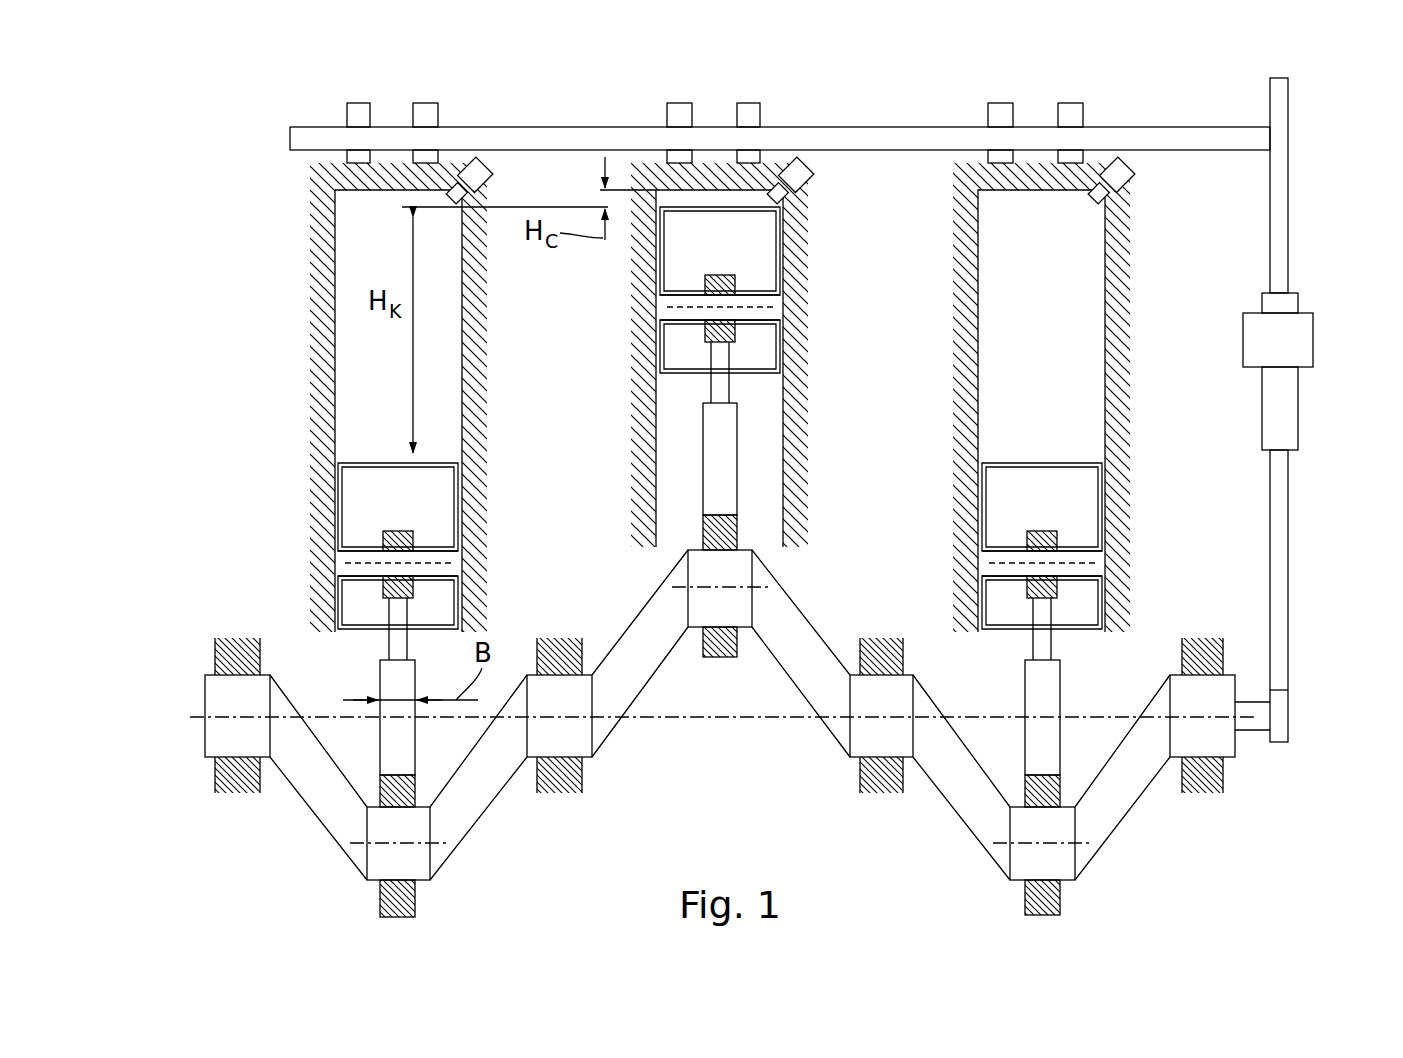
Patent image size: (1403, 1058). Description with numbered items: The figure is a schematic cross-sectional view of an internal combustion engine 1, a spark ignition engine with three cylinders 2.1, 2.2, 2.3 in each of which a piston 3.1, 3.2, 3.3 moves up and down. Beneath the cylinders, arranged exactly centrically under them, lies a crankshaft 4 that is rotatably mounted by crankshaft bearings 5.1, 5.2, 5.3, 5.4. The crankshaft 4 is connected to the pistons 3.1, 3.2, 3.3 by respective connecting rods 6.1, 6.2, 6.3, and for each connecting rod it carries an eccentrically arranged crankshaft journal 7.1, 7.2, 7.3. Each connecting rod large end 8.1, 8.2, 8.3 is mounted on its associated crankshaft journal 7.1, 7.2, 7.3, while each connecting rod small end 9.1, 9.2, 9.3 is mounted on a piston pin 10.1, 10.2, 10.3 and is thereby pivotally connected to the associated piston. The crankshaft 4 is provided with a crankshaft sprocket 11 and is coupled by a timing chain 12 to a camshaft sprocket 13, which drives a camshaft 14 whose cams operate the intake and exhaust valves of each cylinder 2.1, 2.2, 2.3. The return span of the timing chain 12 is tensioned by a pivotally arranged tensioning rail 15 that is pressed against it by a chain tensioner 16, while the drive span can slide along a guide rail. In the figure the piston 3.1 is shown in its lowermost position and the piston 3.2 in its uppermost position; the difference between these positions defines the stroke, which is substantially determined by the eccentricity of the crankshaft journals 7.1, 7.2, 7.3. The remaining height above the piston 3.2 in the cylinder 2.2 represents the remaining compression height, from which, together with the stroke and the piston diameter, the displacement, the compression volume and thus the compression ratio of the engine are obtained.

The internal combustion engine 1 is at (864, 86).
The cylinder 2.1 is at (300, 322).
The cylinder 2.2 is at (626, 392).
The cylinder 2.3 is at (951, 300).
The piston 3.1 is at (387, 546).
The piston 3.2 is at (721, 290).
The piston 3.3 is at (1040, 546).
The crankshaft 4 is at (312, 829).
The crankshaft bearing 5.1 is at (204, 763).
The crankshaft bearing 5.2 is at (597, 767).
The crankshaft bearing 5.3 is at (843, 766).
The crankshaft bearing 5.4 is at (1238, 764).
The connecting rod 6.1 is at (378, 688).
The connecting rod 6.2 is at (701, 460).
The connecting rod 6.3 is at (1023, 697).
The crankshaft journal 7.1 is at (425, 878).
The crankshaft journal 7.2 is at (702, 628).
The crankshaft journal 7.3 is at (1070, 878).
The connecting rod large end 8.1 is at (385, 882).
The connecting rod large end 8.2 is at (738, 630).
The connecting rod large end 8.3 is at (1030, 882).
The connecting rod small end 9.1 is at (458, 571).
The connecting rod small end 9.2 is at (662, 310).
The connecting rod small end 9.3 is at (982, 572).
The piston pin 10.1 is at (338, 573).
The piston pin 10.2 is at (780, 312).
The piston pin 10.3 is at (1102, 572).
The crankshaft sprocket 11 is at (1290, 712).
The timing chain 12 is at (1290, 596).
The camshaft sprocket 13 is at (1290, 107).
The camshaft 14 is at (1177, 126).
The tensioning rail 15 is at (1300, 408).
The chain tensioner 16 is at (1315, 337).